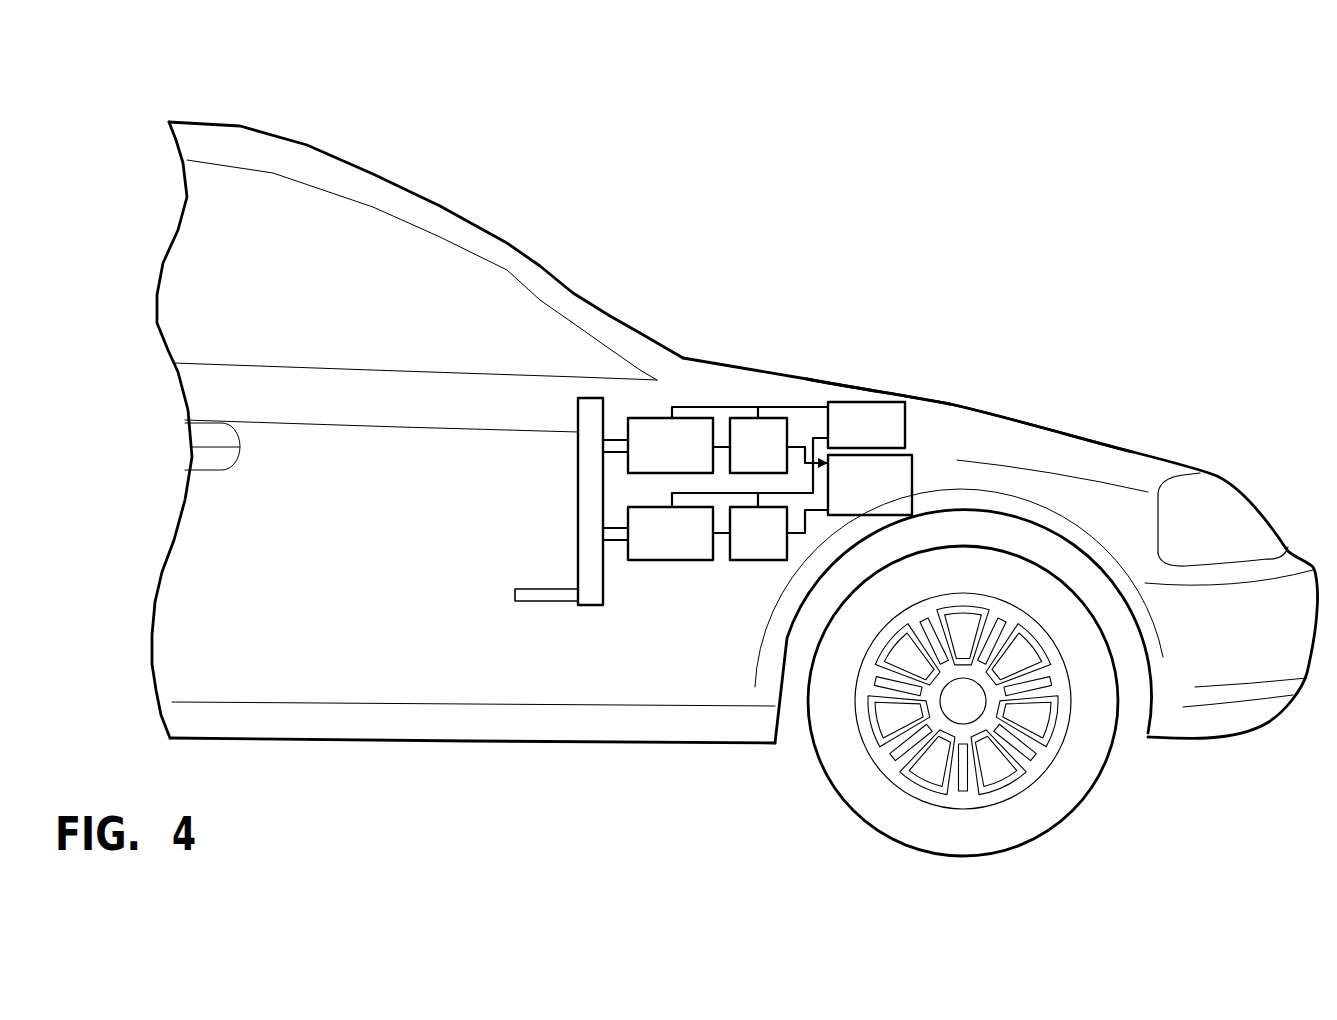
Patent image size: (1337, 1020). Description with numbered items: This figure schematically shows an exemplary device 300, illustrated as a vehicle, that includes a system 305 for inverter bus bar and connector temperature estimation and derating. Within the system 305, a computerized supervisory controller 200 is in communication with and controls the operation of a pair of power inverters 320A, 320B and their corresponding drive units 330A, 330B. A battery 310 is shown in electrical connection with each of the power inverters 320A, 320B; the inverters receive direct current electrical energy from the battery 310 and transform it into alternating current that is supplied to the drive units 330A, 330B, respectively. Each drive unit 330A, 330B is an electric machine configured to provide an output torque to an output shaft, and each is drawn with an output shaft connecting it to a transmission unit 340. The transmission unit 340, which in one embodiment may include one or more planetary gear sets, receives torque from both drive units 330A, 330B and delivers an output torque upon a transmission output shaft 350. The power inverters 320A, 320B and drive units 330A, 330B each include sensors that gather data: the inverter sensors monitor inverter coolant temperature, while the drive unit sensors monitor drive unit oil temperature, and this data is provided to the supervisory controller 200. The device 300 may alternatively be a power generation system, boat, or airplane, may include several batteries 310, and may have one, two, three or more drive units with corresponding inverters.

The device 300 is at (293, 141).
The system 305 is at (890, 249).
The computerized supervisory controller 200 is at (863, 402).
The battery 310 is at (912, 470).
The power inverter 320A is at (745, 418).
The power inverter 320B is at (763, 560).
The drive unit 330A is at (657, 418).
The drive unit 330B is at (680, 560).
The transmission unit 340 is at (595, 605).
The transmission output shaft 350 is at (547, 601).